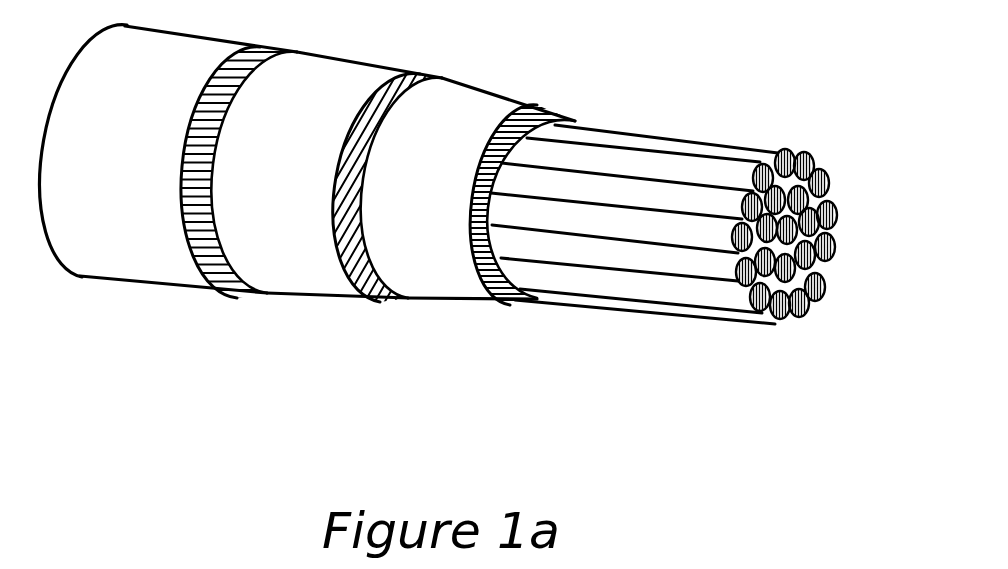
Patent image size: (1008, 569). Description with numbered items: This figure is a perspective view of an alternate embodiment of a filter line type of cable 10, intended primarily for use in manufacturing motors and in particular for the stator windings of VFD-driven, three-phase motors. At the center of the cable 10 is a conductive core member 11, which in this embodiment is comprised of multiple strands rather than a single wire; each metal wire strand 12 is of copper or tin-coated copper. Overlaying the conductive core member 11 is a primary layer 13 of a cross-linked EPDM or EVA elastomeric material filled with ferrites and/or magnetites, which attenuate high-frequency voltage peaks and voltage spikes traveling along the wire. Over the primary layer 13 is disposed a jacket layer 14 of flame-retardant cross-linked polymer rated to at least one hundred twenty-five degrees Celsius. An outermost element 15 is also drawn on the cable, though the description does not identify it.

The filter line type of cable 10 is at (474, 247).
The conductive core member 11 is at (700, 227).
The metal wire strand 12 is at (800, 315).
The primary layer 13 is at (468, 276).
The jacket layer 14 is at (315, 273).
The outer jacket 15 is at (153, 272).